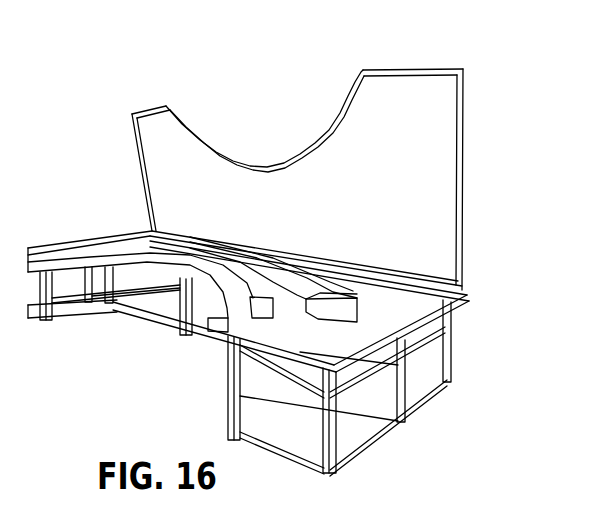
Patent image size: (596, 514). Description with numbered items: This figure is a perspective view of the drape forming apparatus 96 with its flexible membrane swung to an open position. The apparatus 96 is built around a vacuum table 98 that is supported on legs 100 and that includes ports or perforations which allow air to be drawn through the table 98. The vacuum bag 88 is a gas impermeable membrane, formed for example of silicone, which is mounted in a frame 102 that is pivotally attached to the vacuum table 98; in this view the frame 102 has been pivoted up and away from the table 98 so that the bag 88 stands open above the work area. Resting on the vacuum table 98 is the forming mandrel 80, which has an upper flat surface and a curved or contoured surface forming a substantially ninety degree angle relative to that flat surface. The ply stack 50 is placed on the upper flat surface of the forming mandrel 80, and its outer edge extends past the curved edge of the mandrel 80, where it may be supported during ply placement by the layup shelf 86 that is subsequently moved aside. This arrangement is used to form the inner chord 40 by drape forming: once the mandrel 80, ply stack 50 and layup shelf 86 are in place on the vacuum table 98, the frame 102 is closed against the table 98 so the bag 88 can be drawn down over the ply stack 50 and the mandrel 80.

The drape forming apparatus 96 is at (93, 99).
The vacuum bag 88 is at (403, 107).
The frame 102 is at (463, 88).
The vacuum table 98 is at (448, 367).
The forming mandrel 80 is at (387, 313).
The legs 100 is at (183, 317).
The layup shelf 86 is at (228, 323).
The inner chord 40 is at (290, 299).
The ply stack 50 is at (350, 321).